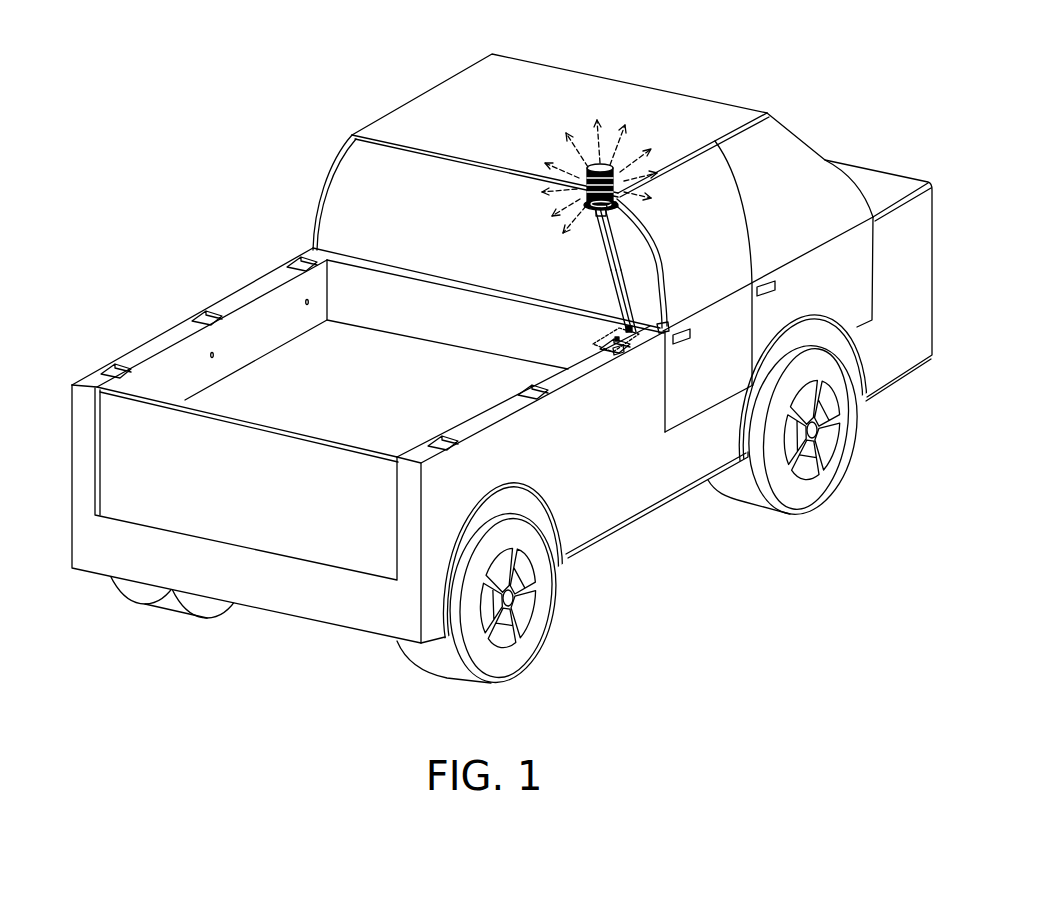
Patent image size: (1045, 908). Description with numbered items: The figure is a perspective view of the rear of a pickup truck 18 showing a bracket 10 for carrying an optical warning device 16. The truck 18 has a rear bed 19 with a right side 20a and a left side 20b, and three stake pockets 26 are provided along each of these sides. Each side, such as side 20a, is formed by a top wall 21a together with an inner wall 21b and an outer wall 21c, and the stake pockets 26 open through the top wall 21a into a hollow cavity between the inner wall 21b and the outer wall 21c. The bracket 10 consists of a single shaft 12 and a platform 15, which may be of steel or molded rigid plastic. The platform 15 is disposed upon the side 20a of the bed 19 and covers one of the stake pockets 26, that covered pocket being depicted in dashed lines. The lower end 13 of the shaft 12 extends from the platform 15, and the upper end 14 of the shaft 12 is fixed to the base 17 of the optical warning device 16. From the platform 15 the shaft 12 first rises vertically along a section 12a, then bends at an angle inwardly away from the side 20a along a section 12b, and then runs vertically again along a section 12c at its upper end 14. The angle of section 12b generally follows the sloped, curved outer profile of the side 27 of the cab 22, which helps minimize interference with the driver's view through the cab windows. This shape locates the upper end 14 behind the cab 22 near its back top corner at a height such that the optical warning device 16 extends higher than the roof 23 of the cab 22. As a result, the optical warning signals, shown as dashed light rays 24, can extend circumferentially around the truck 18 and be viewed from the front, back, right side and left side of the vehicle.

The bracket 10 is at (553, 269).
The shaft 12 is at (657, 295).
The section of shaft 12a is at (625, 327).
The section of shaft 12b is at (624, 300).
The section of shaft 12c is at (622, 203).
The lower end 13 is at (662, 312).
The upper end 14 is at (592, 212).
The platform 15 is at (620, 355).
The optical warning device 16 is at (601, 167).
The base 17 is at (586, 206).
The truck 18 is at (705, 483).
The rear bed 19 is at (343, 393).
The side 20a is at (513, 390).
The side 20b is at (237, 285).
The top wall 21a is at (497, 413).
The inner wall 21b is at (560, 348).
The outer wall 21c is at (615, 513).
The cab 22 is at (323, 183).
The roof 23 is at (512, 135).
The light rays 24 is at (630, 160).
The stake pockets 26 is at (112, 365).
The side of cab 27 is at (650, 258).